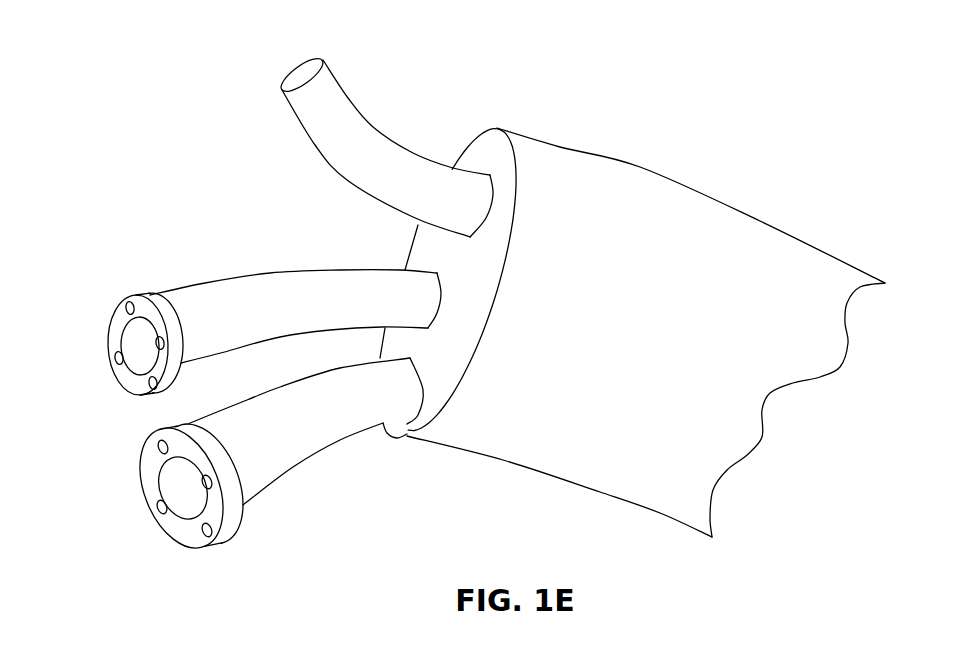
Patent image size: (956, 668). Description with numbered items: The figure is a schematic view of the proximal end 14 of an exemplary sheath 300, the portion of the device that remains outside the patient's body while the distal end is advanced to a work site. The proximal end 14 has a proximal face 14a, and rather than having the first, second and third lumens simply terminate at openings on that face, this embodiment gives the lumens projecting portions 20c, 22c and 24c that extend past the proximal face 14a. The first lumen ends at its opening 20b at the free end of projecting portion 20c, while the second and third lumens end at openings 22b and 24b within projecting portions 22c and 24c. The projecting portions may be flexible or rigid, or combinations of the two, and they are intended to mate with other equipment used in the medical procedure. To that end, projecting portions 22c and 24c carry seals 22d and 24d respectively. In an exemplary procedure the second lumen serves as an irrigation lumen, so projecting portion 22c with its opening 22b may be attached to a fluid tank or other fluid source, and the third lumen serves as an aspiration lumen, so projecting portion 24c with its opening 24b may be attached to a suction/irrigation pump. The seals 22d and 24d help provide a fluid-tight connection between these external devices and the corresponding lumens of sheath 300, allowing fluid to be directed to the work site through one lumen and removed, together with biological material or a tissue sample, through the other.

The proximal end 14 is at (499, 105).
The proximal face 14a is at (443, 258).
The opening 20b is at (300, 80).
The projecting portion 20c is at (373, 127).
The opening 22b is at (138, 343).
The projecting portion 22c is at (239, 283).
The seal 22d is at (133, 293).
The opening 24b is at (183, 497).
The projecting portion 24c is at (313, 435).
The seal 24d is at (225, 537).
The sheath 300 is at (684, 136).